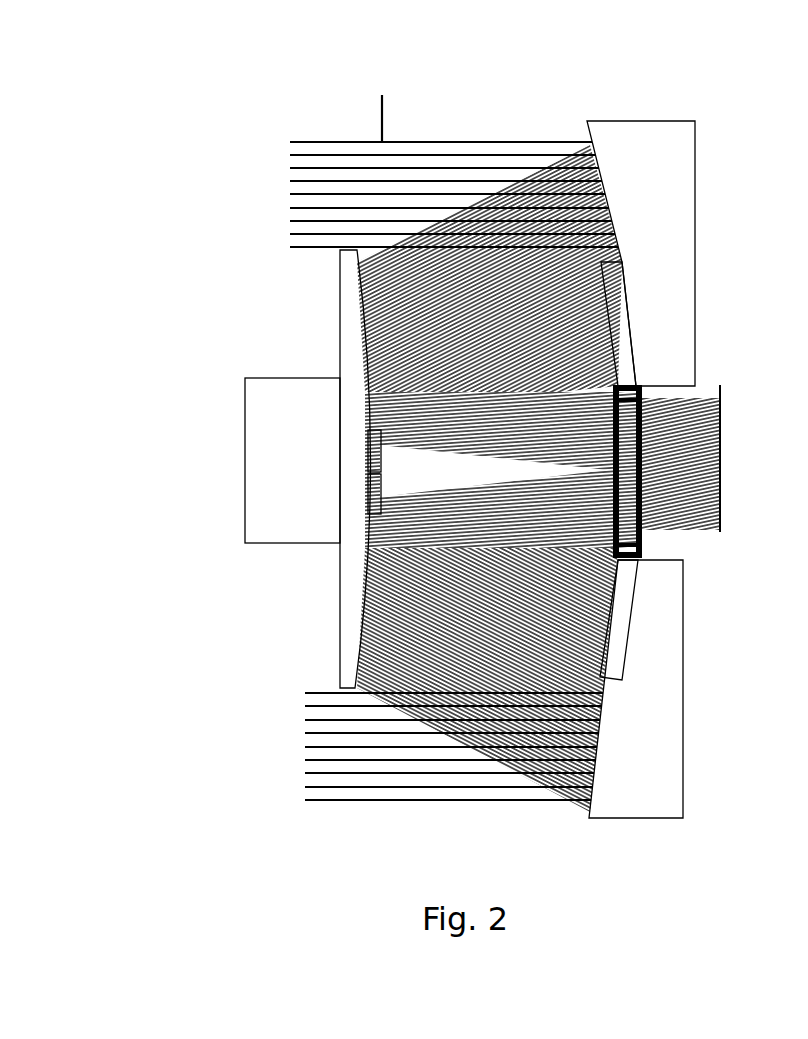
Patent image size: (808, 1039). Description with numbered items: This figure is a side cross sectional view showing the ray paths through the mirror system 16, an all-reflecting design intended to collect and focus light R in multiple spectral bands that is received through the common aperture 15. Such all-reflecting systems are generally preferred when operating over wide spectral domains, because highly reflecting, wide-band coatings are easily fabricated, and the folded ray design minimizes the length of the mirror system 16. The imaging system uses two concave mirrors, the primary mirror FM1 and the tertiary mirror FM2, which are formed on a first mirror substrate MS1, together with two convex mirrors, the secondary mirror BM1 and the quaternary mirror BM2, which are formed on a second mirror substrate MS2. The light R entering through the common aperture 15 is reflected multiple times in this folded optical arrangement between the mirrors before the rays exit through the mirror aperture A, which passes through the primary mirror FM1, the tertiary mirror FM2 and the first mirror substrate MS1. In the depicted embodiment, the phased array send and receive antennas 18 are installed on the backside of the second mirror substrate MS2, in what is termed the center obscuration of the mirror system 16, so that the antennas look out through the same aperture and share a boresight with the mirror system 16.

The common aperture 15 is at (158, 135).
The mirror system 16 is at (722, 106).
The phased array send and receive antennas 18 is at (245, 393).
The light R is at (466, 141).
The first mirror substrate MS1 is at (641, 121).
The second mirror substrate MS2 is at (340, 315).
The primary mirror FM1 is at (602, 258).
The tertiary mirror FM2 is at (618, 578).
The secondary mirror BM1 is at (381, 457).
The quaternary mirror BM2 is at (375, 496).
The mirror aperture A is at (642, 553).